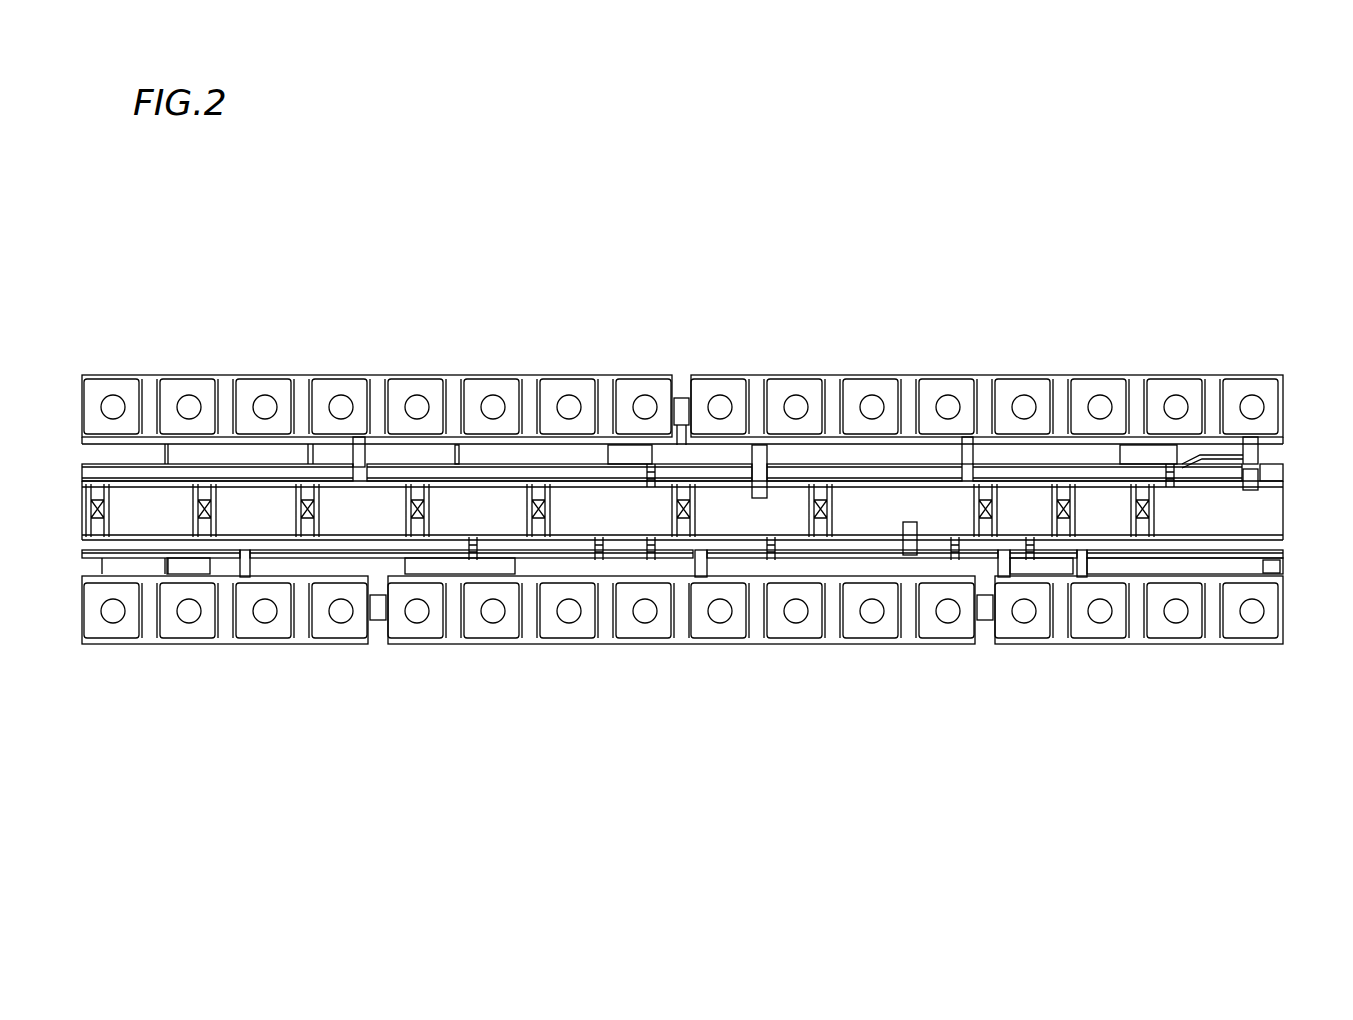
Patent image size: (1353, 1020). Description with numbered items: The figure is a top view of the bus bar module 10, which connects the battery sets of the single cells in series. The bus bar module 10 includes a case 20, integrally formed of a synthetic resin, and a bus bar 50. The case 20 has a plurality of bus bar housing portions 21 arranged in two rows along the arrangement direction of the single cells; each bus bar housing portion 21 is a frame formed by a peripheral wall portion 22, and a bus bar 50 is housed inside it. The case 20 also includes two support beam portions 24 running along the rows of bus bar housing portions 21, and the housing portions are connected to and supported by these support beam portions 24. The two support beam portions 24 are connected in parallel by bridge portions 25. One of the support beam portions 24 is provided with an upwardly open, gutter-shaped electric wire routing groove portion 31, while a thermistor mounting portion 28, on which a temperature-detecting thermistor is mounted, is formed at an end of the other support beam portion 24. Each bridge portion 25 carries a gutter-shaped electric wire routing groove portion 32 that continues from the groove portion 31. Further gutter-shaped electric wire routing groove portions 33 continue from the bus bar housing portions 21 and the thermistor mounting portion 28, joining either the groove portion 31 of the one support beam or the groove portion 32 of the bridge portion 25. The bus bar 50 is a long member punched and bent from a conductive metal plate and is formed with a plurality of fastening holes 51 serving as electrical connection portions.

The bus bar module 10 is at (1114, 262).
The case 20 is at (1225, 369).
The bus bar housing portion 21 is at (482, 375).
The peripheral wall portion 22 is at (70, 646).
The support beam portion 24 is at (875, 466).
The bridge portion 25 is at (433, 513).
The thermistor mounting portion 28 is at (1254, 462).
The electric wire routing groove portion 31 is at (520, 479).
The electric wire routing groove portion 32 is at (405, 503).
The electric wire routing groove portion 33 is at (343, 466).
The bus bar 50 is at (581, 384).
The fastening hole 51 is at (190, 398).